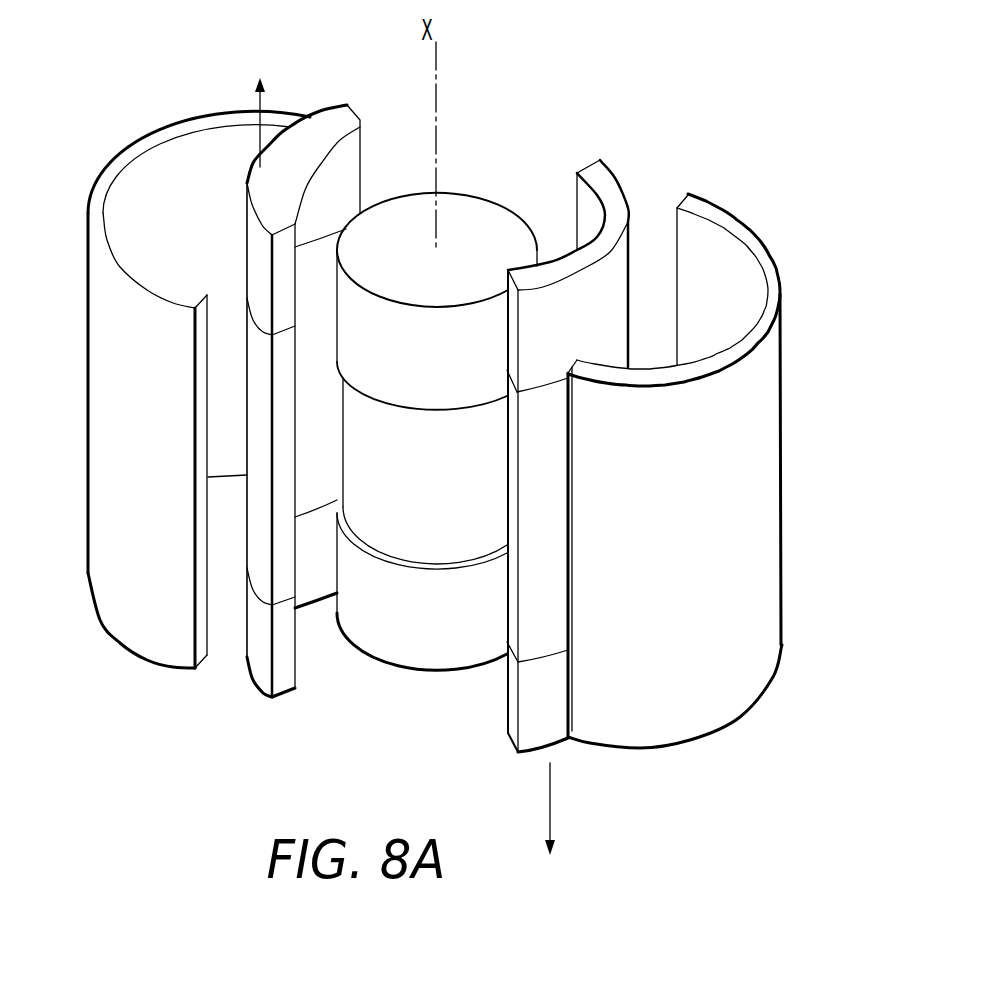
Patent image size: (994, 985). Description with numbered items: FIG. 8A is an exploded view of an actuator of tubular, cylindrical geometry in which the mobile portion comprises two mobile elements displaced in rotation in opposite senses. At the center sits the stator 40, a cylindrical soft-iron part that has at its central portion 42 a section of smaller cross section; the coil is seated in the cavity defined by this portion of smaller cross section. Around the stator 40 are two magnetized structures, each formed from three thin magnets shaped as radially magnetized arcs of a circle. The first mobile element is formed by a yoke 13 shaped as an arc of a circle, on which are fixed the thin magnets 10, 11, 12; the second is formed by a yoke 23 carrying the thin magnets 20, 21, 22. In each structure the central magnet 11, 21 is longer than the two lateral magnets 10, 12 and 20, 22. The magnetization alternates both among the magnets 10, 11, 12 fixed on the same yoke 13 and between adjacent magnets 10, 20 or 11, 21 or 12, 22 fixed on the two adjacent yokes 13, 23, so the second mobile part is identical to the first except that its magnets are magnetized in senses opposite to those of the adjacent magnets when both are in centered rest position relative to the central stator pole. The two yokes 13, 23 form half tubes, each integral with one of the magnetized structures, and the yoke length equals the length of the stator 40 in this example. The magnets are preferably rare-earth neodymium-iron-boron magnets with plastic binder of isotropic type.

The thin magnet 10 is at (632, 178).
The central magnet 11 is at (553, 565).
The thin magnet 12 is at (598, 720).
The yoke 13 is at (737, 203).
The thin magnet 20 is at (345, 157).
The central magnet 21 is at (257, 416).
The thin magnet 22 is at (260, 657).
The yoke 23 is at (162, 132).
The stator 40 is at (452, 221).
The central portion 42 is at (485, 477).